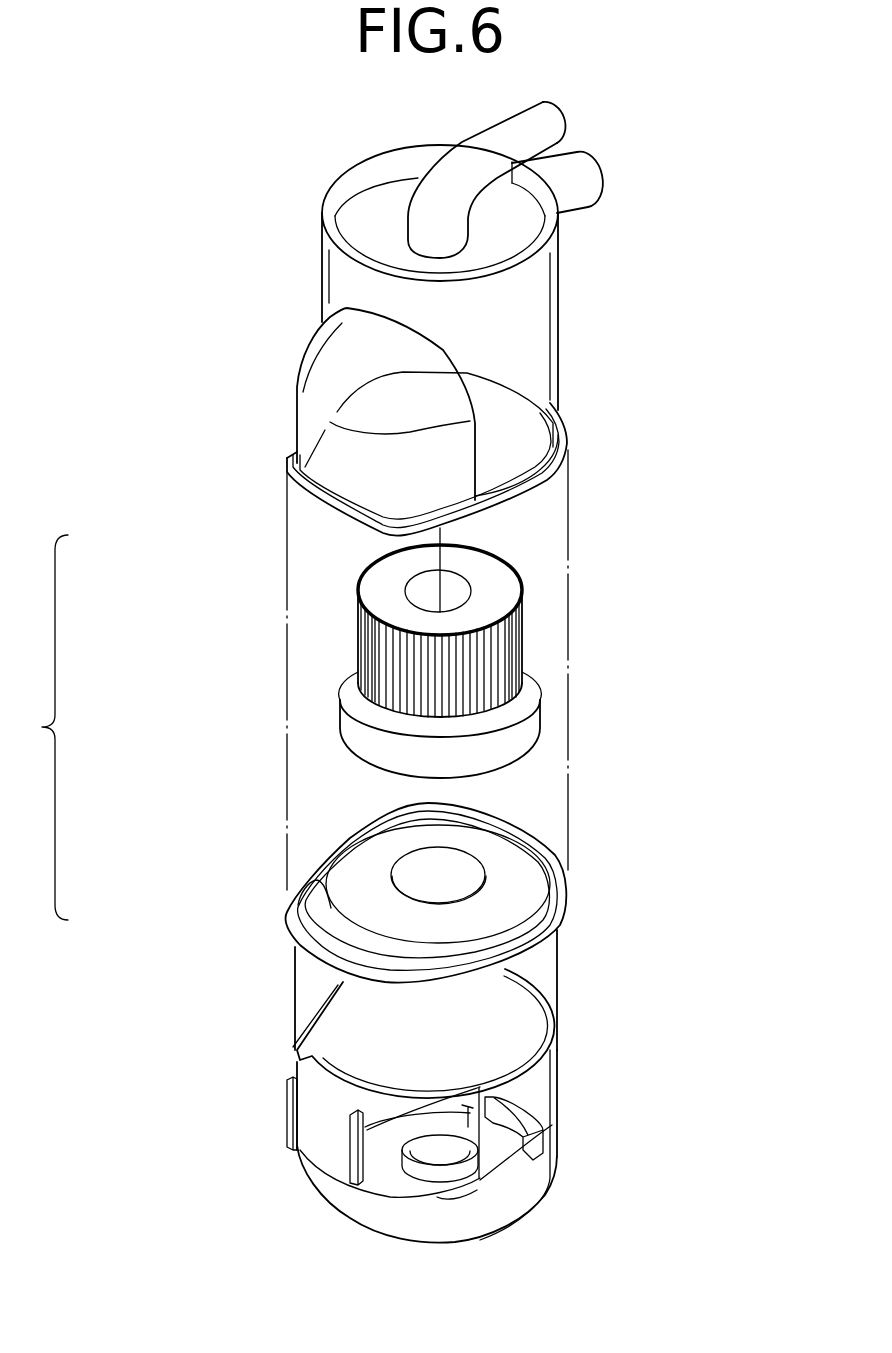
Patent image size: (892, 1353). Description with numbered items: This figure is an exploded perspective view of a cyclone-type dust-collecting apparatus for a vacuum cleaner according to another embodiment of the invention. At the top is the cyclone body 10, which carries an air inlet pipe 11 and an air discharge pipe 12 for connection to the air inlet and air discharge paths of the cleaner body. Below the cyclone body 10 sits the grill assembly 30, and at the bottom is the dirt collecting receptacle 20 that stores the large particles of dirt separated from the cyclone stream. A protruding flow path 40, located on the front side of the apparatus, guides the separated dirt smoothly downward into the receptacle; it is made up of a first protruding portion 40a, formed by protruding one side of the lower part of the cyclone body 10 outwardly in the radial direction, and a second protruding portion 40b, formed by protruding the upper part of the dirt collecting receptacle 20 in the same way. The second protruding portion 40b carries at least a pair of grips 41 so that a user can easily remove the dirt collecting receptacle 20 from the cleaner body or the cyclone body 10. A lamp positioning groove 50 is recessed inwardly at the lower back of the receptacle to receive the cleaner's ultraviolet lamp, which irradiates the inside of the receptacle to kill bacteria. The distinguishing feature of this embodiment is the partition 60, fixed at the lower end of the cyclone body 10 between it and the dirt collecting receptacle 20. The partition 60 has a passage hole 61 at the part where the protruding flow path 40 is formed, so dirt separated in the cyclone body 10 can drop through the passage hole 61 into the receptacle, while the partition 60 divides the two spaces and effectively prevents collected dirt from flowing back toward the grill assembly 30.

The cyclone body 10 is at (322, 270).
The air inlet pipe 11 is at (594, 172).
The air discharge pipe 12 is at (553, 120).
The dirt collecting receptacle 20 is at (338, 1213).
The grill assembly 30 is at (357, 657).
The protruding flow path 40 is at (36, 727).
The first protruding portion 40a is at (297, 423).
The second protruding portion 40b is at (300, 1055).
The grips 41 is at (350, 1142).
The lamp positioning groove 50 is at (525, 1135).
The partition 60 is at (541, 866).
The passage hole 61 is at (320, 920).